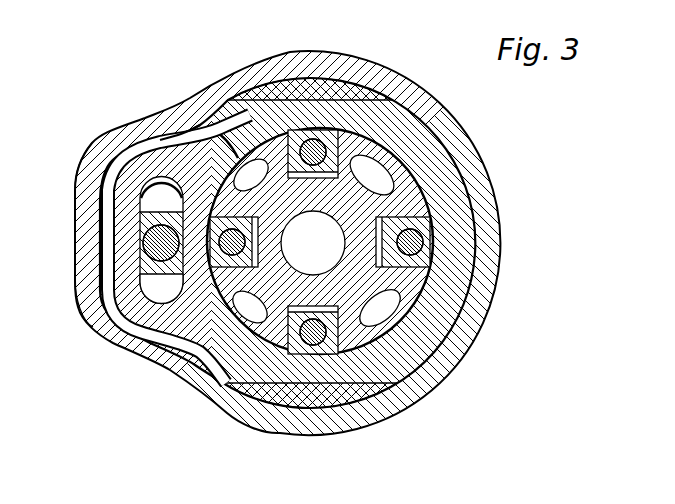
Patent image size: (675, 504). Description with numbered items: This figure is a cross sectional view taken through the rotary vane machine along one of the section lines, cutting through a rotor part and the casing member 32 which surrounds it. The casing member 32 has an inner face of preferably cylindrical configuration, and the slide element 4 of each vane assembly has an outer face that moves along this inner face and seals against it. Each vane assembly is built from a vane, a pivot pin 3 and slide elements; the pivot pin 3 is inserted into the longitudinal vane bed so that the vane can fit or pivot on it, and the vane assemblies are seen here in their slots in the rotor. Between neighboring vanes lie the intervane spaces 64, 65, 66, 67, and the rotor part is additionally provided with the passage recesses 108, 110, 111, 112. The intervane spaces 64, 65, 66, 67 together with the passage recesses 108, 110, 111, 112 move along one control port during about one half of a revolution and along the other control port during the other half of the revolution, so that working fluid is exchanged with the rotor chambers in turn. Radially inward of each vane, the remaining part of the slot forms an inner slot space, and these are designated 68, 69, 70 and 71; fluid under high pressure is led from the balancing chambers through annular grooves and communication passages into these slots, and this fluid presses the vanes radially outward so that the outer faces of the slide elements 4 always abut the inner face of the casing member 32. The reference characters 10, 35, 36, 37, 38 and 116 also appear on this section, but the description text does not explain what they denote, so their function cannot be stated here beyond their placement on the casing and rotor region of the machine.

The pivot pin 3 is at (281, 347).
The slide element 4 is at (305, 342).
The housing 10 is at (232, 83).
The casing member 32 is at (263, 117).
The filler segment 35 is at (303, 80).
The valve member 36 is at (167, 218).
The lobe wall 37 is at (92, 207).
The lobe wall 38 is at (87, 284).
The intervane space 64 is at (213, 127).
The intervane space 65 is at (410, 193).
The intervane space 66 is at (407, 306).
The intervane space 67 is at (252, 328).
The inner slot space 68 is at (257, 258).
The inner slot space 69 is at (310, 177).
The inner slot space 70 is at (378, 235).
The inner slot space 71 is at (328, 306).
The passage recess 108 is at (183, 123).
The passage recess 110 is at (373, 181).
The passage recess 111 is at (375, 300).
The passage recess 112 is at (237, 322).
The port 116 is at (359, 322).